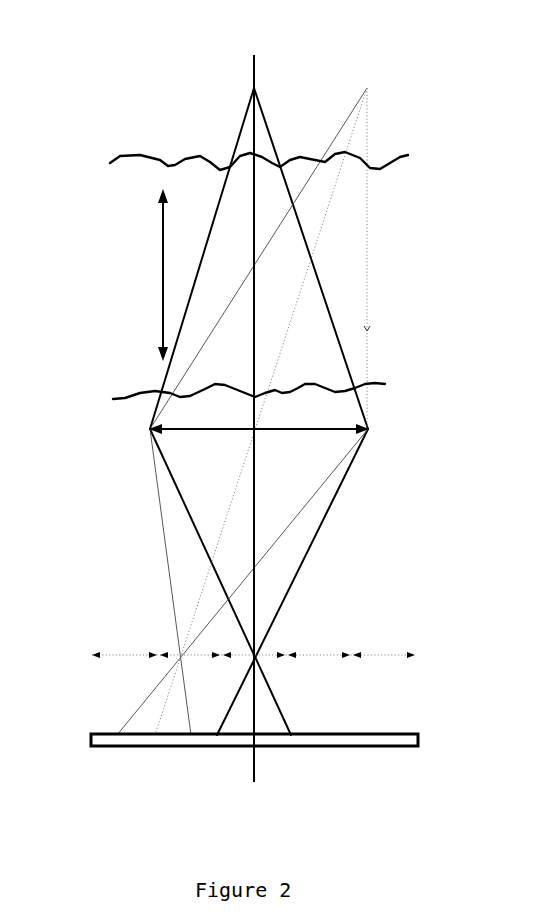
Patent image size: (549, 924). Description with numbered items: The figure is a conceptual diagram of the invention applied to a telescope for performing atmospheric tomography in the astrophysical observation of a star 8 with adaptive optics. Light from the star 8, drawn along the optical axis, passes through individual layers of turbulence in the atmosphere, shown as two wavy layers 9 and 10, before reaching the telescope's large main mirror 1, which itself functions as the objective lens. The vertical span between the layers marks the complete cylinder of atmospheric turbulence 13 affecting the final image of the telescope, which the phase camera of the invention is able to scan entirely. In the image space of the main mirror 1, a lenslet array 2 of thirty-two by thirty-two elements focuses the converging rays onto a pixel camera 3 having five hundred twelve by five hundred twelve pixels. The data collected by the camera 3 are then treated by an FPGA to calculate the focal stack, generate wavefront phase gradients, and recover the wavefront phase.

The main mirror 1 is at (238, 429).
The lenslet array 2 is at (235, 655).
The pixel camera 3 is at (236, 742).
The star 8 is at (254, 402).
The layer of turbulence 9 is at (268, 163).
The layer of turbulence 10 is at (267, 387).
The cylinder of atmospheric turbulence 13 is at (146, 275).